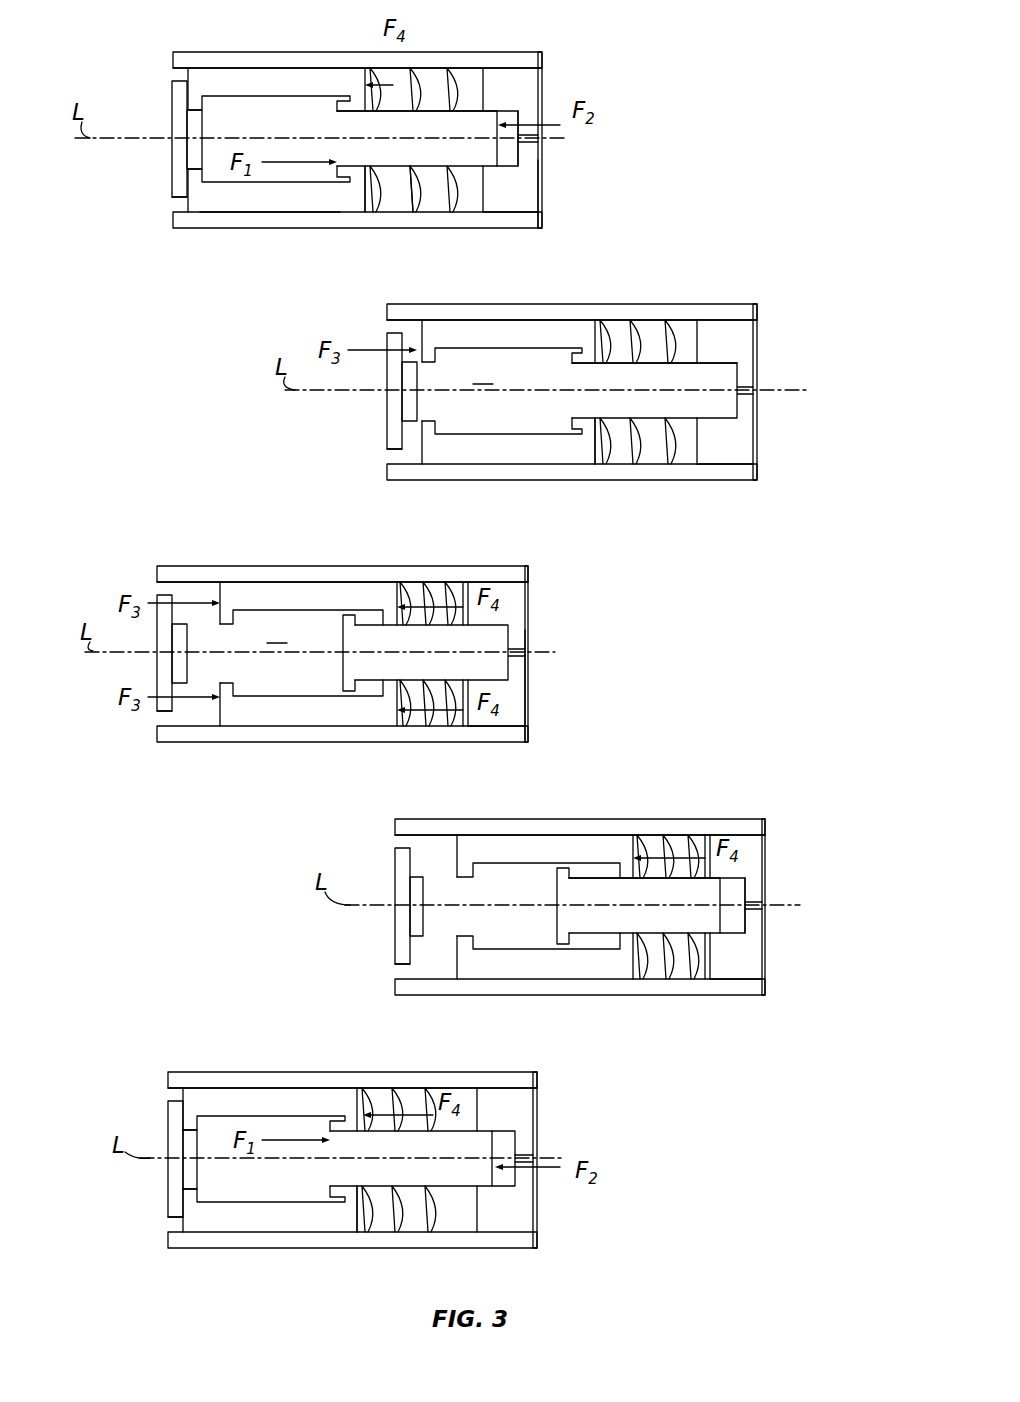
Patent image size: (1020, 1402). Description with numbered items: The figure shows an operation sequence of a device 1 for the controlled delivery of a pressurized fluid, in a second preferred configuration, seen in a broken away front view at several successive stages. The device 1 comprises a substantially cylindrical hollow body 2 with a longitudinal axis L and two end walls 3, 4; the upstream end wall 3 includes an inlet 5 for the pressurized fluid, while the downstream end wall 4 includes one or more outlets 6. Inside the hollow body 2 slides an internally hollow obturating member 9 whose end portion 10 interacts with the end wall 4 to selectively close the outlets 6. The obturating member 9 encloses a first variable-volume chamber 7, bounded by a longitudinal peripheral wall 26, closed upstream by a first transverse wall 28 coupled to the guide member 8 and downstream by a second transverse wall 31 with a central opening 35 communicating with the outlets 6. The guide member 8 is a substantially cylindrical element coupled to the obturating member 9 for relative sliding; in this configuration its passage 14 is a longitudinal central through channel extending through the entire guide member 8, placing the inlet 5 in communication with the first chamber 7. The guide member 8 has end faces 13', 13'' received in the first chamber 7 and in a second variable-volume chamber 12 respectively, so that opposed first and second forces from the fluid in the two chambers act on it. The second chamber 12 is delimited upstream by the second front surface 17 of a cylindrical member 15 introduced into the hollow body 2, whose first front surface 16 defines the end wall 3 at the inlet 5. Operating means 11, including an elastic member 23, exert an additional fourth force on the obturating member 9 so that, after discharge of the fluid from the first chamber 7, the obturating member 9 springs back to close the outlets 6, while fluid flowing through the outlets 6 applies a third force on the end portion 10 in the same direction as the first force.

The device 1 is at (665, 52).
The hollow body 2 is at (522, 62).
The end wall 3 is at (540, 220).
The end wall 4 is at (172, 222).
The inlet 5 is at (545, 143).
The outlets 6 is at (173, 82).
The first variable-volume chamber 7 is at (250, 100).
The guide member 8 is at (430, 157).
The obturating member 9 is at (300, 76).
The end portion 10 is at (203, 200).
The operating means 11 is at (458, 105).
The second variable-volume chamber 12 is at (517, 113).
The end face 13' is at (460, 623).
The end face 13'' is at (579, 650).
The passage 14 is at (424, 135).
The cylindrical member 15 is at (528, 195).
The first front surface 16 is at (540, 173).
The second front surface 17 is at (518, 165).
The elastic member 23 is at (403, 200).
The longitudinal peripheral wall 26 is at (250, 213).
The first substantially transverse wall 28 is at (365, 200).
The second substantially transverse wall 31 is at (182, 212).
The central opening 35 is at (198, 108).